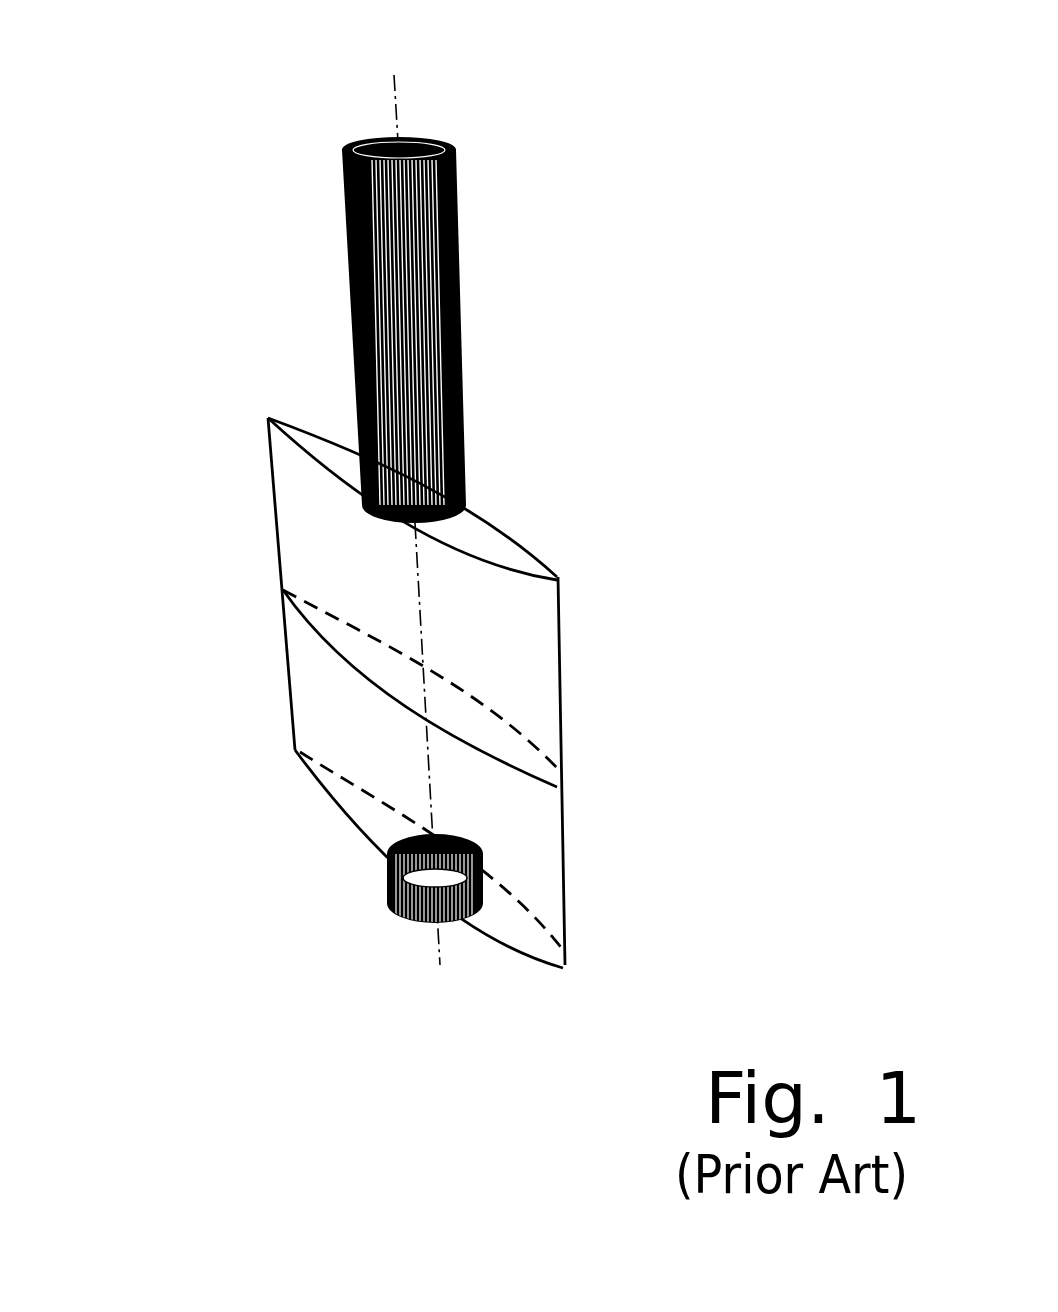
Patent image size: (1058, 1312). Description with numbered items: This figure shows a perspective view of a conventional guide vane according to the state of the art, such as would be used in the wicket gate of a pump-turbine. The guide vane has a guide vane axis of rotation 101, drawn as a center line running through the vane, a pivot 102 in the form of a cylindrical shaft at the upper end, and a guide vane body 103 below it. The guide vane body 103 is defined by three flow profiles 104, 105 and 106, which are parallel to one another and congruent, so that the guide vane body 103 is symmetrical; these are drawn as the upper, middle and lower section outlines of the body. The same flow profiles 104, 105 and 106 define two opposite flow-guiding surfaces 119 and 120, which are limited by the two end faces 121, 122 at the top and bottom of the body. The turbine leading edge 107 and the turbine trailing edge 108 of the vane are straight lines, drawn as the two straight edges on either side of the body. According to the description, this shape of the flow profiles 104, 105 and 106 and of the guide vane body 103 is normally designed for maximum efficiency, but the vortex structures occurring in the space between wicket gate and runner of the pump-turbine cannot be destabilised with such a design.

The guide vane axis of rotation 101 is at (395, 82).
The pivot 102 is at (460, 240).
The guide vane body 103 is at (415, 684).
The flow profile 104 is at (523, 540).
The flow profile 105 is at (337, 648).
The flow profile 106 is at (343, 817).
The turbine leading edge 107 is at (567, 865).
The turbine trailing edge 108 is at (270, 472).
The flow-guiding surface 119 is at (421, 678).
The flow-guiding surface 120 is at (487, 861).
The end face 121 is at (473, 527).
The end face 122 is at (385, 822).